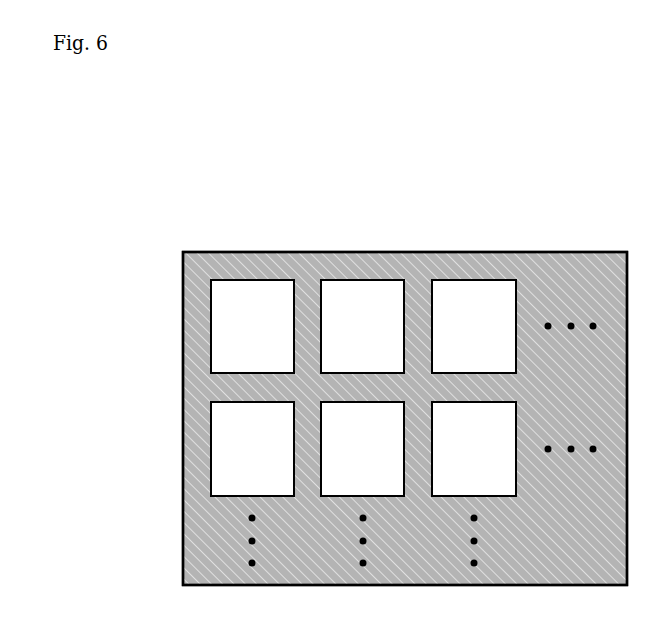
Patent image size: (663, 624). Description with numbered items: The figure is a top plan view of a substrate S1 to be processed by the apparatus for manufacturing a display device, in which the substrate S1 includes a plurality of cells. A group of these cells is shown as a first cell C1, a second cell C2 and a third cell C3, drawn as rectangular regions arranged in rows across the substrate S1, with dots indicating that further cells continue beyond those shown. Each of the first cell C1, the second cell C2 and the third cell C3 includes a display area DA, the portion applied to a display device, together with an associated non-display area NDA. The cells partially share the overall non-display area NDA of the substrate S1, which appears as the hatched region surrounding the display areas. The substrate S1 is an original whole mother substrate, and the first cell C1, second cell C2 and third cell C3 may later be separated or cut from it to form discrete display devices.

The substrate to be processed S1 is at (404, 172).
The first cell C1 is at (251, 258).
The second cell C2 is at (361, 258).
The third cell C3 is at (473, 258).
The display area DA is at (228, 337).
The non-display area NDA is at (193, 390).